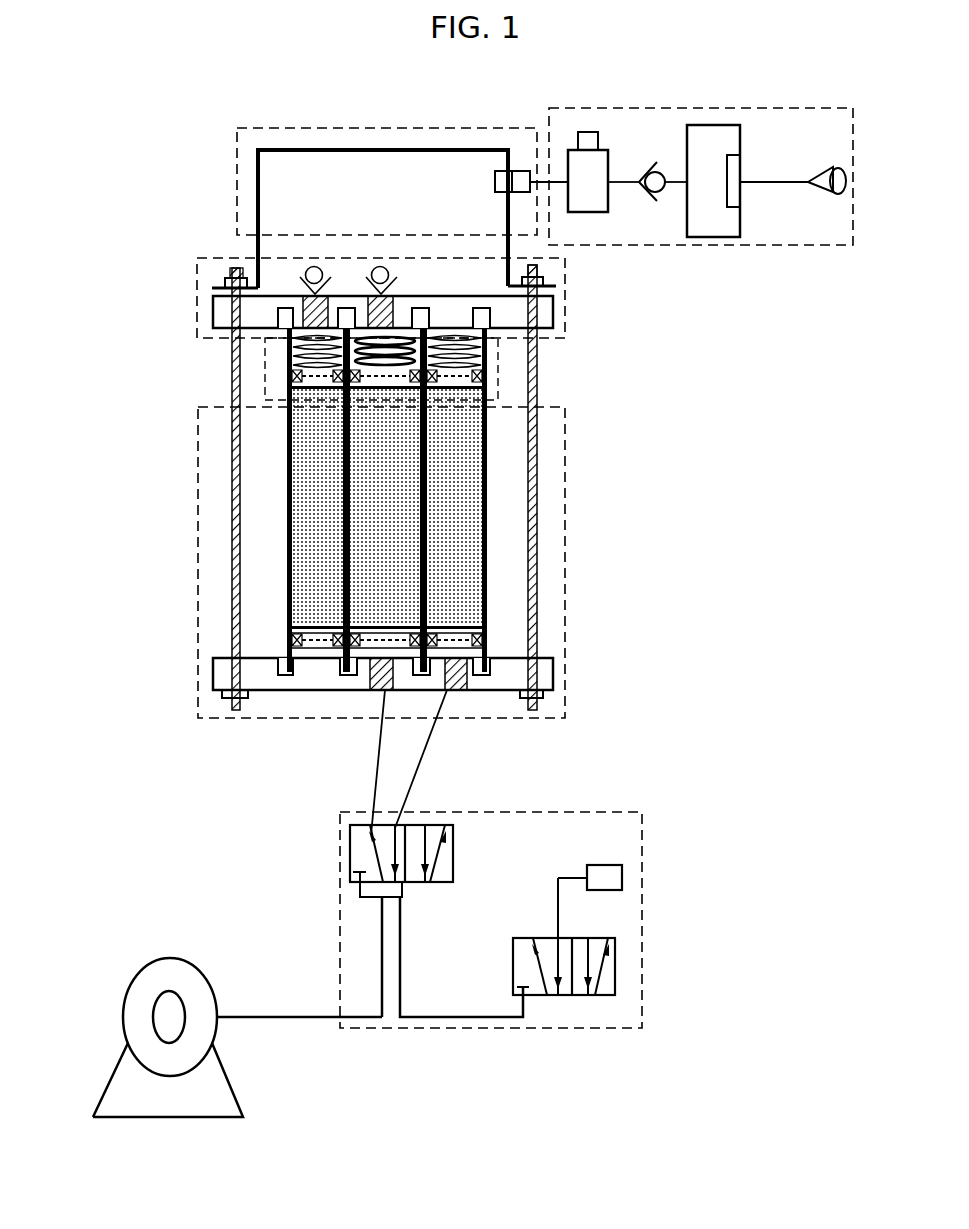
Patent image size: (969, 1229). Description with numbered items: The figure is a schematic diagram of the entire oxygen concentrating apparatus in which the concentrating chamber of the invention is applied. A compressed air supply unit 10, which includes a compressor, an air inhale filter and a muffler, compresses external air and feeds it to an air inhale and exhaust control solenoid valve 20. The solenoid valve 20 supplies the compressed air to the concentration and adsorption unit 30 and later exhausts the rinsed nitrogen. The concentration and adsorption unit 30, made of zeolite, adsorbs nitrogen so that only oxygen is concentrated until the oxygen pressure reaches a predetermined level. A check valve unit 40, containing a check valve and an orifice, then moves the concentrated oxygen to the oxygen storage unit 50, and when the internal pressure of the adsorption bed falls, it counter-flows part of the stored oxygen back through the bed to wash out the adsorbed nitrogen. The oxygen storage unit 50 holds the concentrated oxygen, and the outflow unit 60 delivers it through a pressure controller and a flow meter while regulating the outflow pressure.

The compressed air supply unit 10 is at (142, 962).
The air inhale and exhaust control solenoid valve 20 is at (338, 863).
The concentration and adsorption unit 30 is at (196, 546).
The check valve unit 40 is at (196, 302).
The oxygen storage unit 50 is at (236, 185).
The outflow unit 60 is at (676, 250).